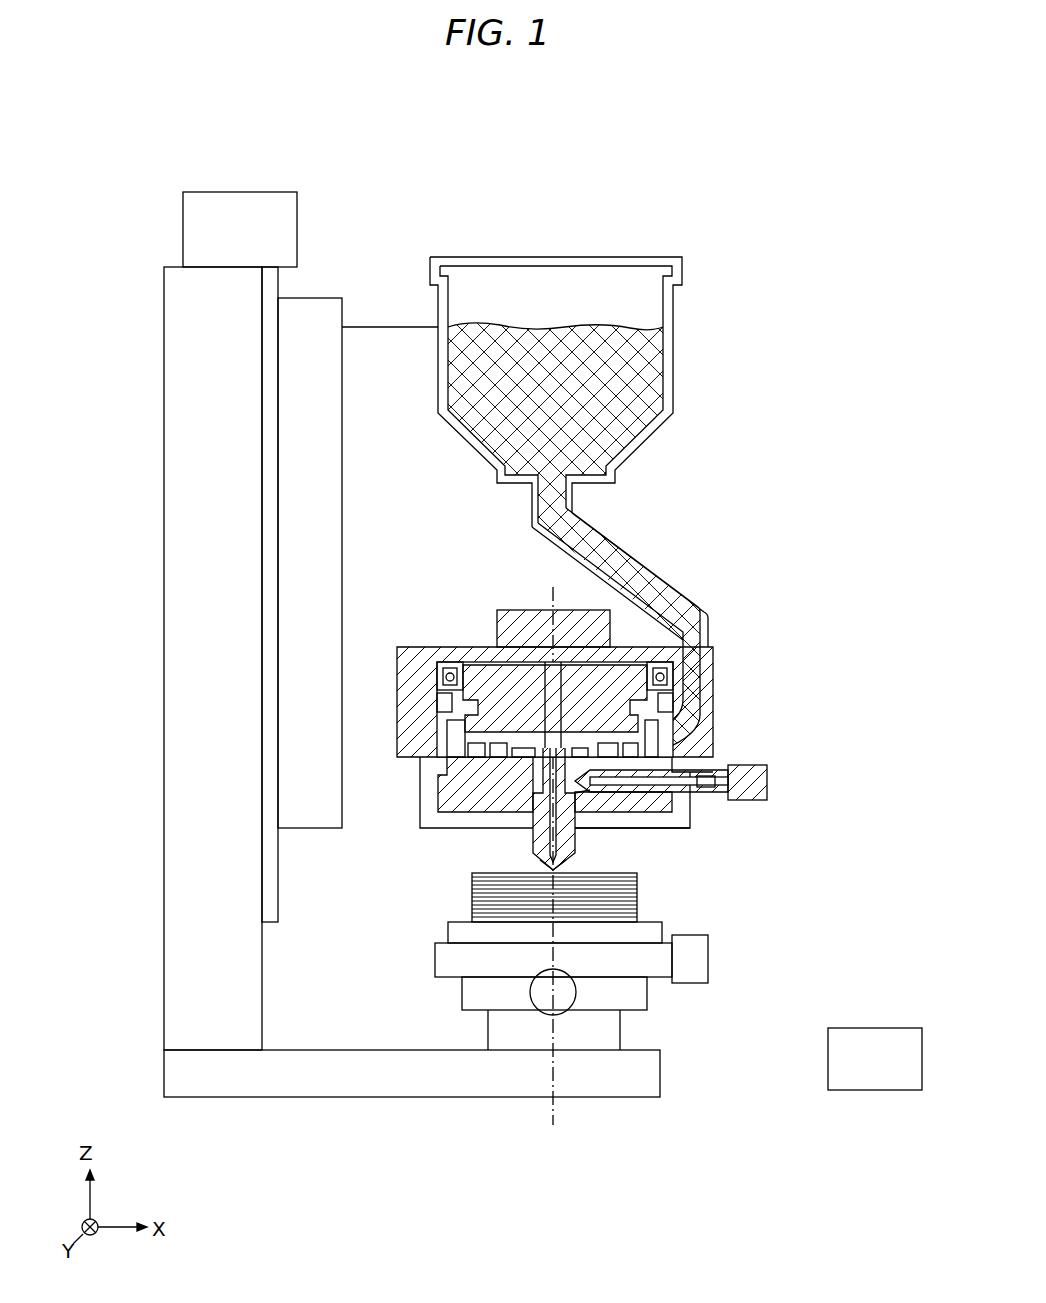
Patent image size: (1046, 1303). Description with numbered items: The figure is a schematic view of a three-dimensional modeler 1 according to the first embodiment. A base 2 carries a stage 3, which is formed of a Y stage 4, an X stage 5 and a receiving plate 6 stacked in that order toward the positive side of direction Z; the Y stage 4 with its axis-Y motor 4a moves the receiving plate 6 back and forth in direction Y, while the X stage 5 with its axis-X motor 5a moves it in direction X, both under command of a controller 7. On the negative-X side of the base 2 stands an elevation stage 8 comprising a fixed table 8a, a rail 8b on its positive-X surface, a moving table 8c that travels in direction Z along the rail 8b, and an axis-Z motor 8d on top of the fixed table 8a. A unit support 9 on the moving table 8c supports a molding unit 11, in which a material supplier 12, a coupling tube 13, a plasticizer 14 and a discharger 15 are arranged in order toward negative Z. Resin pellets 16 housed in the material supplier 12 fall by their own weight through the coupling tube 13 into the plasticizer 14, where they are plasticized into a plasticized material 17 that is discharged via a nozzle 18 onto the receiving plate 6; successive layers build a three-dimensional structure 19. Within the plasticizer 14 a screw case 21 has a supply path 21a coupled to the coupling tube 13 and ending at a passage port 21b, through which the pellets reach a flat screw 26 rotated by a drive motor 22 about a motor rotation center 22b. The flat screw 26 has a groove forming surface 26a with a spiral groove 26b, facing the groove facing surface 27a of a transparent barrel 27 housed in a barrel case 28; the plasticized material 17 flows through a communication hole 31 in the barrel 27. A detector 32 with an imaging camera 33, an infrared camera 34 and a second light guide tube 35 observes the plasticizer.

The three-dimensional modeler 1 is at (780, 164).
The base 2 is at (628, 1097).
The stage 3 is at (792, 920).
The Y stage 4 is at (650, 1000).
The axis-Y motor 4a is at (575, 1000).
The X stage 5 is at (672, 975).
The axis-X motor 5a is at (700, 960).
The receiving plate 6 is at (662, 930).
The controller 7 is at (880, 1090).
The elevation stage 8 is at (342, 158).
The fixed table 8a is at (164, 548).
The rail 8b is at (282, 913).
The moving table 8c is at (318, 820).
The axis-Z motor 8d is at (183, 230).
The unit support 9 is at (372, 327).
The molding unit 11 is at (893, 247).
The material supplier 12 is at (673, 300).
The coupling tube 13 is at (648, 565).
The plasticizer 14 is at (831, 610).
The discharger 15 is at (831, 800).
The resin pellets 16 is at (655, 368).
The plasticized material 17 is at (533, 815).
The nozzle 18 is at (540, 862).
The three-dimensional structure 19 is at (640, 880).
The screw case 21 is at (425, 650).
The supply path 21a is at (673, 672).
The passage port 21b is at (673, 700).
The drive motor 22 is at (515, 612).
The motor rotation center 22b is at (548, 1036).
The flat screw 26 is at (447, 722).
The groove forming surface 26a is at (445, 790).
The spiral groove 26b is at (468, 748).
The barrel 27 is at (690, 805).
The groove facing surface 27a is at (490, 700).
The barrel case 28 is at (660, 830).
The communication hole 31 is at (548, 660).
The detector 32 is at (747, 782).
The imaging camera 33 is at (745, 765).
The infrared camera 34 is at (706, 781).
The second light guide tube 35 is at (612, 805).